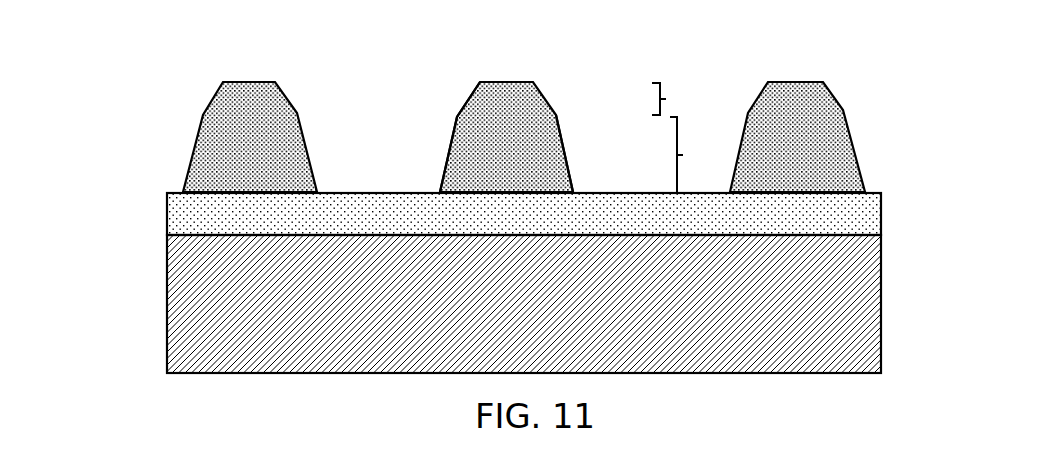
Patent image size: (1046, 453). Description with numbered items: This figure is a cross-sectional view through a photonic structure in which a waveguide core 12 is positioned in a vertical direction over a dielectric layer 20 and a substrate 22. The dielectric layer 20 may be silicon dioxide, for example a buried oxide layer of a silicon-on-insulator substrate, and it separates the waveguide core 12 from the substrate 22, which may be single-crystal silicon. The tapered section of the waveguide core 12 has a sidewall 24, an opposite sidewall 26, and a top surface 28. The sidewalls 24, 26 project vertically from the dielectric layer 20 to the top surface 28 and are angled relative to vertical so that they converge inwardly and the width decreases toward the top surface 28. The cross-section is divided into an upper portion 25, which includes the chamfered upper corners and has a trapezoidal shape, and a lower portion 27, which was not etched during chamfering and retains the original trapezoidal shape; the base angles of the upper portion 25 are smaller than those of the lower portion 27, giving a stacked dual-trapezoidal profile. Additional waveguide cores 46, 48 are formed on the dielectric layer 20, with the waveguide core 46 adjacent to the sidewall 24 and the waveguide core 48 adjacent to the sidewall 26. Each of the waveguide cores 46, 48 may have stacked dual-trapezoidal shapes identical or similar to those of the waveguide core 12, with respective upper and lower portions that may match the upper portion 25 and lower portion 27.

The waveguide core 12 is at (525, 140).
The dielectric layer 20 is at (222, 215).
The substrate 22 is at (222, 307).
The sidewall 24 is at (445, 163).
The upper portion 25 is at (675, 99).
The sidewall 26 is at (570, 175).
The lower portion 27 is at (695, 154).
The top surface 28 is at (525, 80).
The waveguide core 46 is at (233, 137).
The waveguide core 48 is at (803, 125).